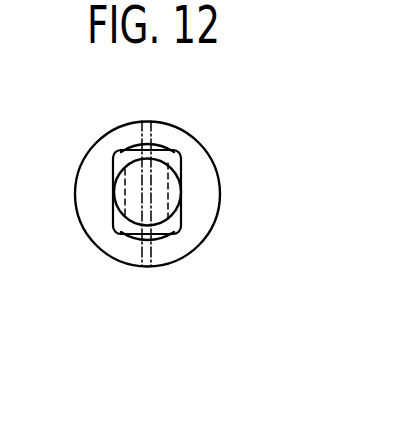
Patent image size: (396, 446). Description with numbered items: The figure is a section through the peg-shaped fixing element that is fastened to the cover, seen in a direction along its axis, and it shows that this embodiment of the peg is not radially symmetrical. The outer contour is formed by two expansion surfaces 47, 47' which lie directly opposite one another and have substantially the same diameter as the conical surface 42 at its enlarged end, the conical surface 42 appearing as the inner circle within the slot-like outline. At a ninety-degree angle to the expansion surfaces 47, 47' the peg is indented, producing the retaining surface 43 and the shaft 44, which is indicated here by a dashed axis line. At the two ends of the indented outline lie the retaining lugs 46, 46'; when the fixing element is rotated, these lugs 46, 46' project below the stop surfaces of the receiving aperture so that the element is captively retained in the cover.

The conical surface 42 is at (157, 192).
The retaining surface 43 is at (117, 205).
The shaft 44 is at (168, 183).
The retaining lug 46 is at (171, 123).
The retaining lug 46' is at (155, 270).
The expansion surface 47 is at (97, 164).
The expansion surface 47' is at (201, 218).